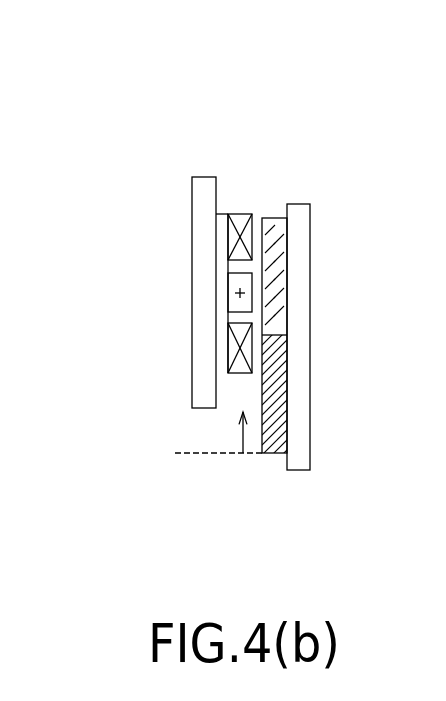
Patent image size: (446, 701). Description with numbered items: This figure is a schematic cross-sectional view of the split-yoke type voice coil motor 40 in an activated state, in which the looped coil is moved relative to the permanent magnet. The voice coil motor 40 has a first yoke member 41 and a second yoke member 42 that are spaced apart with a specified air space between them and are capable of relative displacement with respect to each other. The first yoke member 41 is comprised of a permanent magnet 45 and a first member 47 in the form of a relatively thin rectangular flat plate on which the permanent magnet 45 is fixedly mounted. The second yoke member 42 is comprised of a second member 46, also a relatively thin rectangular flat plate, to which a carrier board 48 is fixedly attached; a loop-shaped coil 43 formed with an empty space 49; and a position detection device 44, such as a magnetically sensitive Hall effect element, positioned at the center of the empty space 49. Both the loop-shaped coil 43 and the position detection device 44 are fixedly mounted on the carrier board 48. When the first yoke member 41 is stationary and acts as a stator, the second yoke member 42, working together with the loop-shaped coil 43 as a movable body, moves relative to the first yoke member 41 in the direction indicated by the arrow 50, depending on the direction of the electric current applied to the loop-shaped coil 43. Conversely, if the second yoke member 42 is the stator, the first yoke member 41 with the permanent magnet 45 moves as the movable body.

The voice coil motor 40 is at (120, 198).
The first yoke member 41 is at (313, 238).
The second yoke member 42 is at (188, 220).
The loop-shaped coil 43 is at (237, 213).
The position detection device 44 is at (228, 298).
The permanent magnet 45 is at (273, 218).
The second member 46 is at (192, 388).
The first member 47 is at (300, 417).
The carrier board 48 is at (234, 378).
The empty space 49 is at (232, 320).
The arrow 50 is at (242, 440).